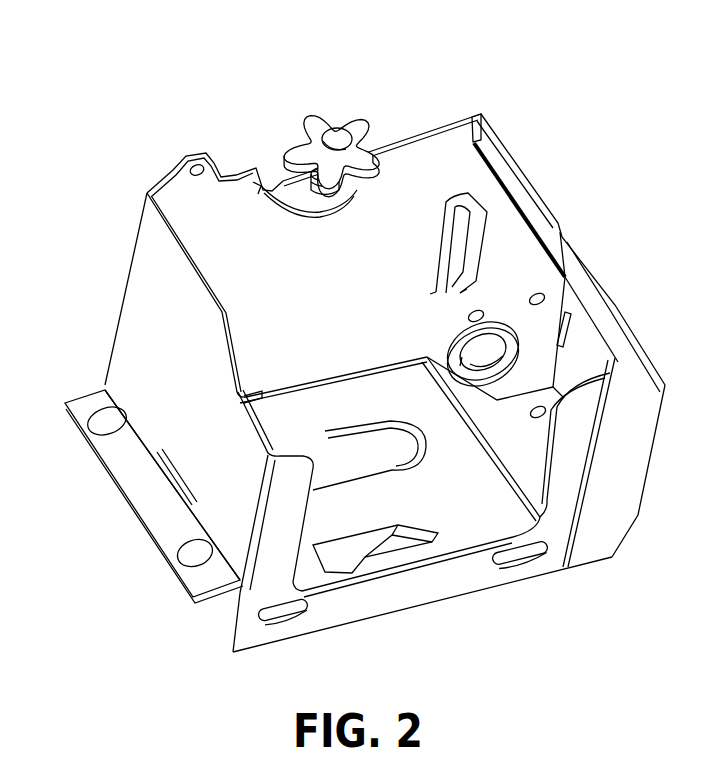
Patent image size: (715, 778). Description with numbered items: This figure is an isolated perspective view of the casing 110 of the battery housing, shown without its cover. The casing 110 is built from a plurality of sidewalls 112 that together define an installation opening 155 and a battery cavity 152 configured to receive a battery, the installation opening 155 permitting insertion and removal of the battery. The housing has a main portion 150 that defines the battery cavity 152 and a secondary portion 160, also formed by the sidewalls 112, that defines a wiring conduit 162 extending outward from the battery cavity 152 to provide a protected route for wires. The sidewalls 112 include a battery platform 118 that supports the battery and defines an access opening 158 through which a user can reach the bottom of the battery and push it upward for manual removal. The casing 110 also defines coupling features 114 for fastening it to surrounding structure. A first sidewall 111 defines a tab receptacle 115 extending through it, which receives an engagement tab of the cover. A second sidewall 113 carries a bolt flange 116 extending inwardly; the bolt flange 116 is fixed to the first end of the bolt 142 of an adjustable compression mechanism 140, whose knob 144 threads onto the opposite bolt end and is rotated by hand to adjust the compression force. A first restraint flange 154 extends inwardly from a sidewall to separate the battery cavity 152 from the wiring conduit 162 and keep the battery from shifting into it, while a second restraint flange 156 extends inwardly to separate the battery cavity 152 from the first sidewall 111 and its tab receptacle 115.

The casing 110 is at (88, 172).
The first sidewall 111 is at (558, 537).
The sidewalls 112 is at (508, 233).
The second sidewall 113 is at (393, 157).
The coupling features 114 is at (187, 168).
The tab receptacle 115 is at (303, 612).
The bolt flange 116 is at (256, 188).
The battery platform 118 is at (500, 505).
The adjustable compression mechanism 140 is at (327, 142).
The bolt 142 is at (345, 208).
The knob 144 is at (318, 112).
The main portion 150 is at (207, 337).
The battery cavity 152 is at (270, 250).
The first restraint flange 154 is at (452, 227).
The installation opening 155 is at (392, 223).
The second restraint flange 156 is at (422, 538).
The access opening 158 is at (388, 537).
The secondary portion 160 is at (663, 330).
The wiring conduit 162 is at (587, 323).